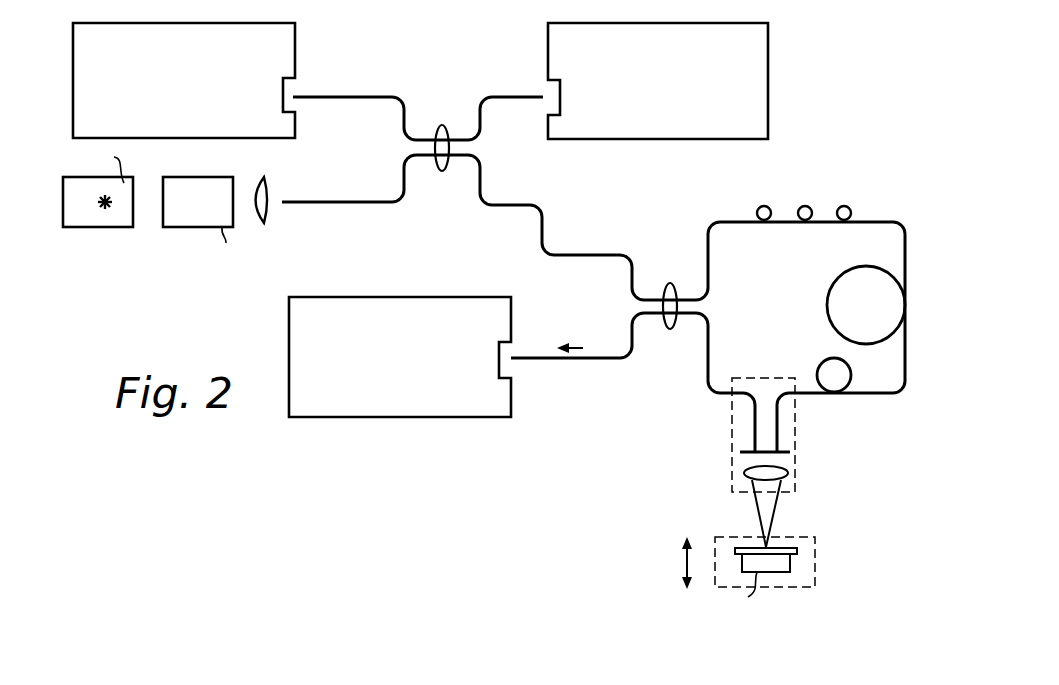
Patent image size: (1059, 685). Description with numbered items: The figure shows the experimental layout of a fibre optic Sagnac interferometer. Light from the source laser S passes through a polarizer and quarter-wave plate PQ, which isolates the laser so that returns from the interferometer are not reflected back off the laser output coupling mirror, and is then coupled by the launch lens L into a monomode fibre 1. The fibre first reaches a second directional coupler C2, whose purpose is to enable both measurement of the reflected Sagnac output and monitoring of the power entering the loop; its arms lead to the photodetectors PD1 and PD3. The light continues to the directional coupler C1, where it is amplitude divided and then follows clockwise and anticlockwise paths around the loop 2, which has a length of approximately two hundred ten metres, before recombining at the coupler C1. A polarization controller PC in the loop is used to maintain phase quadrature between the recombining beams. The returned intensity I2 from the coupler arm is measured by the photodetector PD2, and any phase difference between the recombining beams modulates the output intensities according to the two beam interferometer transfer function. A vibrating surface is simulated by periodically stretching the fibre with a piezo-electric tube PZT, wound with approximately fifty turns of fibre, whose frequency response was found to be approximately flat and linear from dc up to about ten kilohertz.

The monomode fibre 1 is at (338, 204).
The loop 2 is at (905, 246).
The source S is at (96, 228).
The polarizer and quarter-wave plate PQ is at (201, 228).
The launch lens L is at (270, 181).
The photodetector PD1 is at (184, 80).
The photodetector PD2 is at (400, 357).
The photodetector PD3 is at (658, 81).
The directional coupler C1 is at (633, 327).
The second directional coupler C2 is at (418, 107).
The polarization controller PC is at (764, 206).
The piezo-electric tube PZT is at (783, 563).
The intensity I2 is at (573, 330).